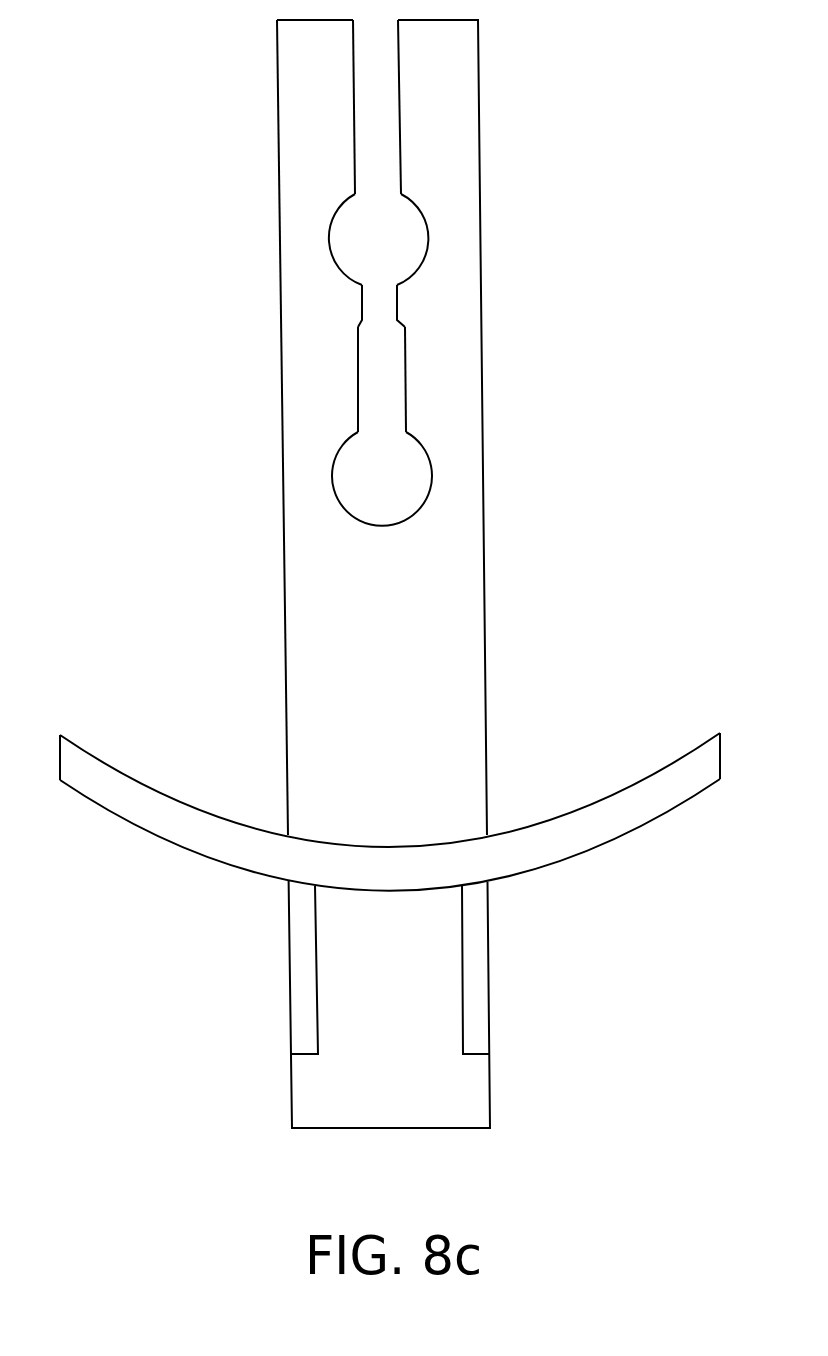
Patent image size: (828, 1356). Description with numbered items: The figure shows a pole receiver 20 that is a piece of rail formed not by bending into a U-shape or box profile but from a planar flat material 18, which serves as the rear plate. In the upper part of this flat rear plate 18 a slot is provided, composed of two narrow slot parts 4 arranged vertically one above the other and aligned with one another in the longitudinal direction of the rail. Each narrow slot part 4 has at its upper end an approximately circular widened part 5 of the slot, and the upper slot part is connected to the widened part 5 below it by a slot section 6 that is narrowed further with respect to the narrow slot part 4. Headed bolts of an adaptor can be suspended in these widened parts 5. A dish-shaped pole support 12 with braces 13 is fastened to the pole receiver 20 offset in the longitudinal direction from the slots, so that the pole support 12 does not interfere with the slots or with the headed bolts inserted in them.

The narrow slot part 4 is at (362, 133).
The widened part of the slot 5 is at (413, 208).
The narrowed slot section 6 is at (369, 293).
The dish-shaped pole support 12 is at (190, 805).
The braces 13 is at (300, 982).
The planar flat material 18 is at (300, 562).
The pole receiver 20 is at (212, 329).